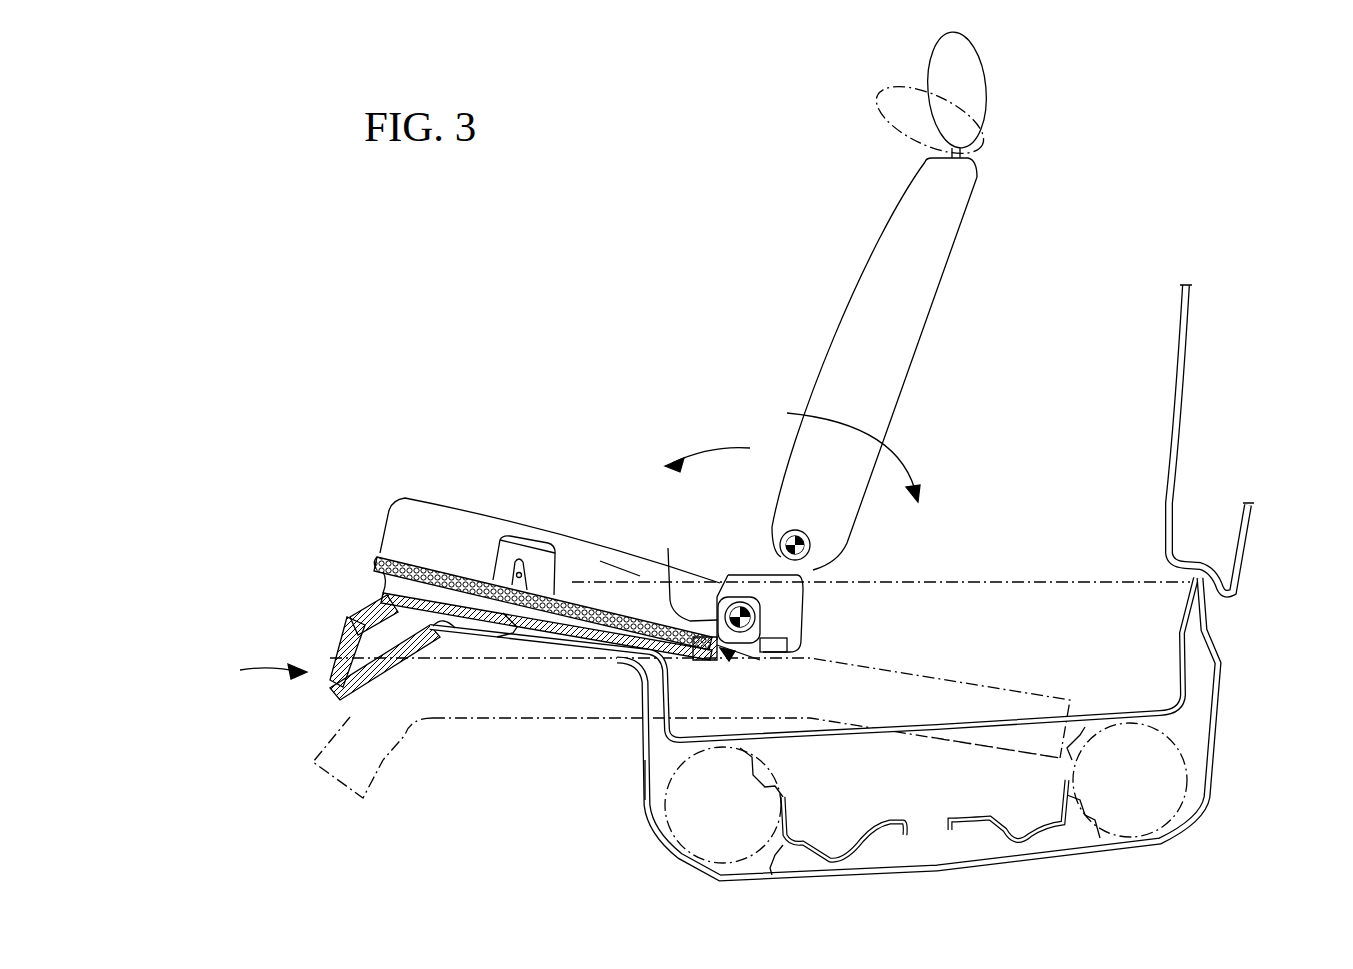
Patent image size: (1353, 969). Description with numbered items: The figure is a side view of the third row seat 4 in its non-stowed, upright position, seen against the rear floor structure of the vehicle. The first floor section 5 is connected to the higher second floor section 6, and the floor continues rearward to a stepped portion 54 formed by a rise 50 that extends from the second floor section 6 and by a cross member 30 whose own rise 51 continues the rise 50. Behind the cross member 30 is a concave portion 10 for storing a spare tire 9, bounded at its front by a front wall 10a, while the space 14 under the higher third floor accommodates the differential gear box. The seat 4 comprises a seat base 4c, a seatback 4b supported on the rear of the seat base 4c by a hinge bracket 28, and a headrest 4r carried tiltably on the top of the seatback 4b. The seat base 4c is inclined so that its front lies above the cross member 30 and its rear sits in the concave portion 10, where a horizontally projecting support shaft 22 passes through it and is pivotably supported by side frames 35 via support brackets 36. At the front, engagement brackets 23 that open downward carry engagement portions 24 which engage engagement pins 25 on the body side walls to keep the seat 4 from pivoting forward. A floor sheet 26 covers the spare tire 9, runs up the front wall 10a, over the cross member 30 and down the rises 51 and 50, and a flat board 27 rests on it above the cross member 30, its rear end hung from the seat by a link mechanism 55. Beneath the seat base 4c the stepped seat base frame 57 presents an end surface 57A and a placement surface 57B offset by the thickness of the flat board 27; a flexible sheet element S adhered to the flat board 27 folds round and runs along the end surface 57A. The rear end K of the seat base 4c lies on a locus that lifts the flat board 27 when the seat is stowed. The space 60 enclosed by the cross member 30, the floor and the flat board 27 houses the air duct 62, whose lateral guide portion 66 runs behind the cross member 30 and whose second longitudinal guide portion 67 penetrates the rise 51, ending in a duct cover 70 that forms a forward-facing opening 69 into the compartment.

The third row seat 4 is at (988, 90).
The headrest 4r is at (972, 97).
The seatback 4b is at (940, 232).
The seat base 4c is at (417, 515).
The first floor section 5 is at (728, 448).
The second floor section 6 is at (893, 457).
The spare tire 9 is at (1053, 840).
The concave portion 10 is at (1150, 698).
The front wall 10a is at (648, 775).
The space 14 is at (522, 775).
The support shaft 22 is at (760, 608).
The engagement bracket 23 is at (505, 558).
The engagement portion 24 is at (522, 540).
The engagement pin 25 is at (519, 574).
The floor sheet 26 is at (947, 720).
The flat board 27 is at (383, 572).
The hinge bracket 28 is at (810, 545).
The cross member 30 is at (383, 598).
The side frame 35 is at (458, 718).
The support bracket 36 is at (735, 575).
The rise 50 is at (330, 700).
The rise 51 is at (330, 680).
The stepped portion 54 is at (255, 668).
The link mechanism 55 is at (735, 658).
The seat base frame 57 is at (673, 597).
The end surface 57A is at (593, 592).
The placement surface 57B is at (720, 650).
The space 60 is at (530, 625).
The air duct 62 is at (500, 607).
The lateral guide portion 66 is at (460, 608).
The second longitudinal guide portion 67 is at (393, 633).
The opening 69 is at (335, 640).
The duct cover 70 is at (328, 663).
The rear end K is at (815, 630).
The sheet element S is at (380, 560).